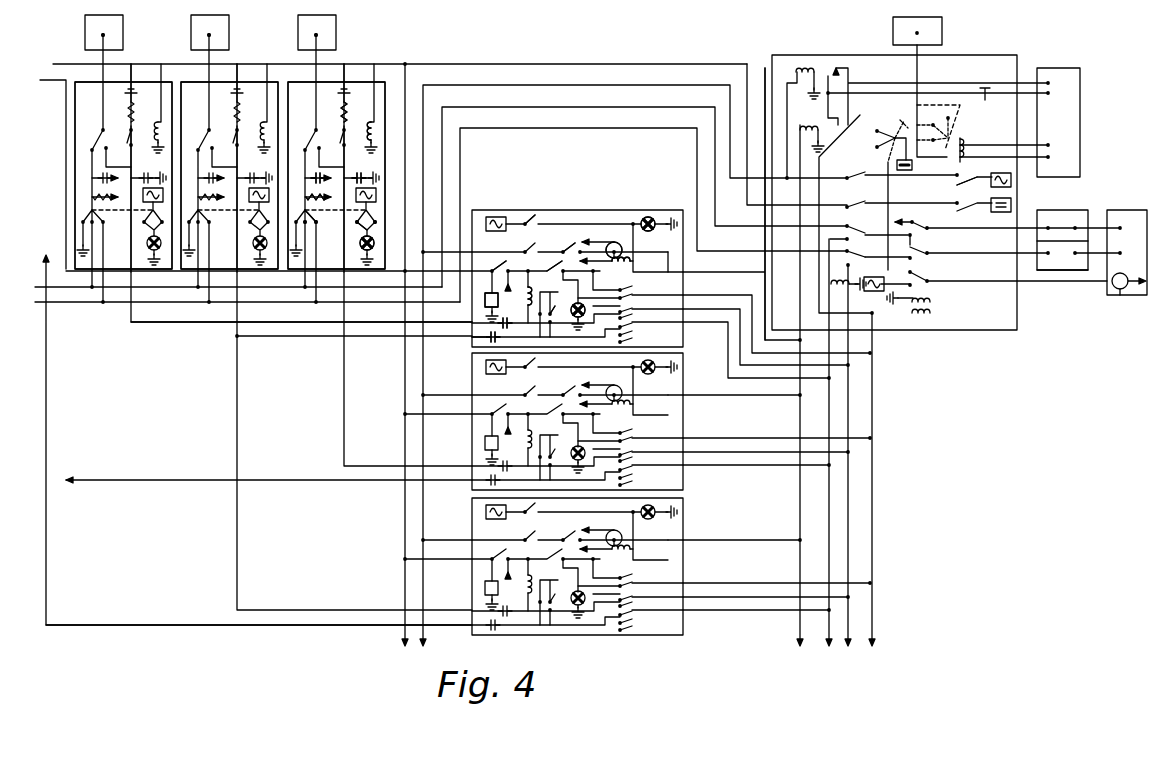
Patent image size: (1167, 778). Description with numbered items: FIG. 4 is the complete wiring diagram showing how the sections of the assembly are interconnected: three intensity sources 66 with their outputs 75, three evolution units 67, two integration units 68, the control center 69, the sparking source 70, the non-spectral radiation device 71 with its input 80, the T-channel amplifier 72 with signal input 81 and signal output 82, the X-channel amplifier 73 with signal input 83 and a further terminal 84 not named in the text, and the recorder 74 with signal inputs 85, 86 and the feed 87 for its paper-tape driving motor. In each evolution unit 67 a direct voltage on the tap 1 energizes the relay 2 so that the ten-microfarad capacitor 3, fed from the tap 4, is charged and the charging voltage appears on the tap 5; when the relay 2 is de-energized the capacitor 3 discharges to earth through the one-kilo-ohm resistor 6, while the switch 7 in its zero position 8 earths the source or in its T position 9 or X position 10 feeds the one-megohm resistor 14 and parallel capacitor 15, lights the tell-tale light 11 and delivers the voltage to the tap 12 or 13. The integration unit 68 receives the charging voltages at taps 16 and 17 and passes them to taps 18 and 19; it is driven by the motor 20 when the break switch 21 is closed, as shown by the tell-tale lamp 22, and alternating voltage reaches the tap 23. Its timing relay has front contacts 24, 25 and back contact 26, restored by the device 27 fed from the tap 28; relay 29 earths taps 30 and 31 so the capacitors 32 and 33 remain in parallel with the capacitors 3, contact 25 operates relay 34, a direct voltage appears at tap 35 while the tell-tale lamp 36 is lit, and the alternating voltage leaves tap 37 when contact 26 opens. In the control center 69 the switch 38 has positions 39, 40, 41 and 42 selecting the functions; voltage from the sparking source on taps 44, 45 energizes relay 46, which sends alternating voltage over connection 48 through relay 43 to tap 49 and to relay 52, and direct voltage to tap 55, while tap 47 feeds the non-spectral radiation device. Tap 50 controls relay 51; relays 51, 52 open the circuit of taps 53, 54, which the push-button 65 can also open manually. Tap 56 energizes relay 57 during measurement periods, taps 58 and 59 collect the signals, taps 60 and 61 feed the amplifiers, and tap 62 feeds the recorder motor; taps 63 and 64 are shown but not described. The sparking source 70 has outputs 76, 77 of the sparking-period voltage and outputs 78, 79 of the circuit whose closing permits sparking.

The tap 1 is at (168, 90).
The relay 2 is at (375, 142).
The capacitor 3 is at (363, 178).
The tap 4 is at (100, 99).
The tap 5 is at (40, 278).
The resistor 6 is at (341, 120).
The switch 7 is at (344, 222).
The position 8 is at (353, 221).
The position 9 is at (335, 230).
The position 10 is at (337, 214).
The tell-tale light 11 is at (374, 244).
The tap 12 is at (92, 278).
The tap 13 is at (104, 278).
The resistor 14 is at (316, 197).
The capacitor 15 is at (315, 178).
The tap 16 is at (452, 320).
The tap 17 is at (458, 337).
The tap 18 is at (766, 447).
The tap 19 is at (757, 463).
The motor 20 is at (614, 242).
The break switch 21 is at (527, 230).
The tell-tale lamp 22 is at (652, 216).
The tap 23 is at (496, 254).
The front contact 24 is at (501, 268).
The front contact 25 is at (560, 268).
The back contact 26 is at (578, 246).
The device 27 is at (483, 293).
The tap 28 is at (281, 408).
The relay 29 is at (538, 292).
The tap 30 is at (552, 328).
The tap 31 is at (535, 338).
The capacitor 32 is at (508, 317).
The capacitor 33 is at (482, 337).
The relay 34 is at (630, 265).
The tap 35 is at (777, 432).
The tell-tale lamp 36 is at (577, 312).
The tap 37 is at (742, 305).
The switch 38 is at (948, 105).
The position 39 is at (890, 160).
The position 40 is at (905, 146).
The position 41 is at (870, 133).
The position 42 is at (950, 118).
The relay 43 is at (866, 292).
The tap 44 is at (985, 148).
The tap 45 is at (985, 165).
The relay 46 is at (962, 142).
The tap 47 is at (917, 70).
The connection 48 is at (933, 176).
The tap 49 is at (428, 360).
The tap 50 is at (800, 322).
The relay 51 is at (812, 124).
The relay 52 is at (793, 62).
The tap 53 is at (937, 100).
The tap 54 is at (950, 90).
The tap 55 is at (706, 346).
The tap 56 is at (875, 342).
The relay 57 is at (932, 302).
The tap 58 is at (825, 350).
The tap 59 is at (864, 350).
The tap 60 is at (1007, 221).
The tap 61 is at (1014, 246).
The tap 62 is at (1007, 277).
The line 63 is at (675, 189).
The line 64 is at (685, 208).
The push-button 65 is at (988, 96).
The intensity sources 66 is at (113, 29).
The evolution units 67 is at (70, 48).
The integration units 68 is at (513, 210).
The control center 69 is at (985, 68).
The sparking source 70 is at (1047, 68).
The non-spectral radiation device 71 is at (935, 28).
The T-channel amplifier 72 is at (1060, 210).
The X-channel amplifier 73 is at (1062, 272).
The recorder 74 is at (1125, 222).
The intensity source outputs 75 is at (103, 35).
The output 76 is at (1050, 145).
The output 77 is at (1050, 157).
The output 78 is at (1050, 93).
The output 79 is at (1050, 82).
The input of the non-spectral radiation device 80 is at (917, 33).
The signal input of amplifier T 81 is at (1048, 226).
The signal output of amplifier T 82 is at (1075, 226).
The signal input of amplifier X 83 is at (1048, 255).
The terminal 84 is at (1075, 255).
The recorder input 85 is at (1117, 226).
The recorder input 86 is at (1131, 253).
The feed for the recorder paper-tape driving motor 87 is at (1120, 296).